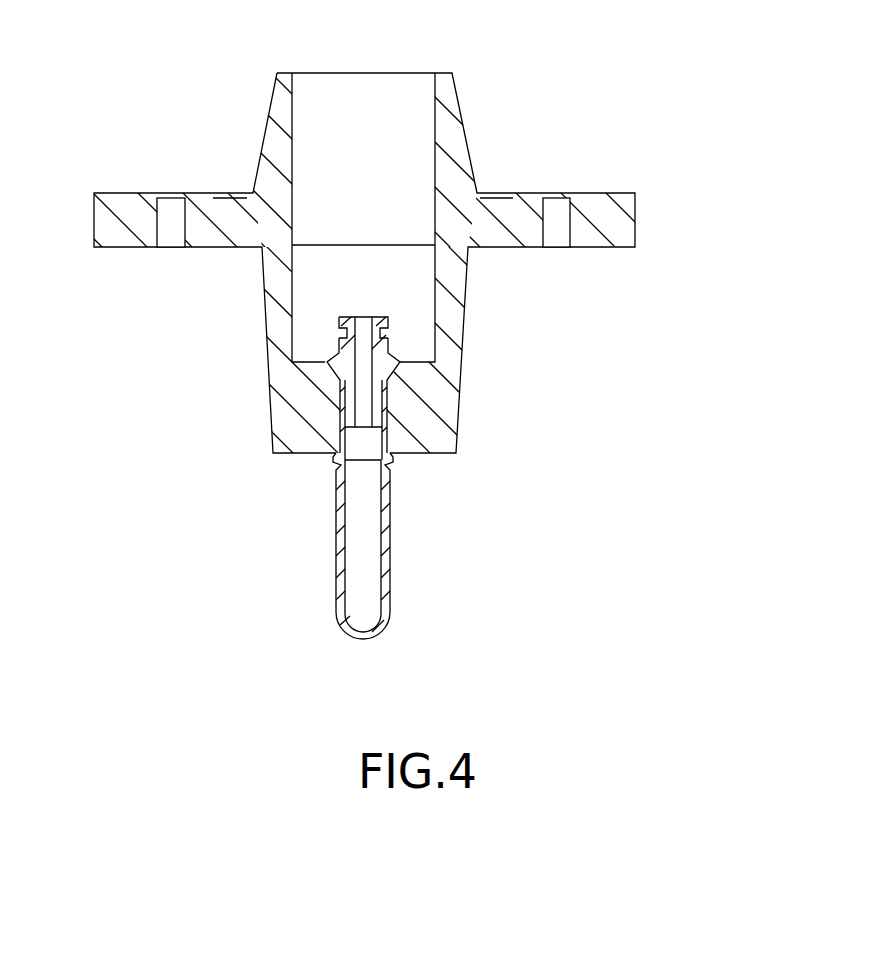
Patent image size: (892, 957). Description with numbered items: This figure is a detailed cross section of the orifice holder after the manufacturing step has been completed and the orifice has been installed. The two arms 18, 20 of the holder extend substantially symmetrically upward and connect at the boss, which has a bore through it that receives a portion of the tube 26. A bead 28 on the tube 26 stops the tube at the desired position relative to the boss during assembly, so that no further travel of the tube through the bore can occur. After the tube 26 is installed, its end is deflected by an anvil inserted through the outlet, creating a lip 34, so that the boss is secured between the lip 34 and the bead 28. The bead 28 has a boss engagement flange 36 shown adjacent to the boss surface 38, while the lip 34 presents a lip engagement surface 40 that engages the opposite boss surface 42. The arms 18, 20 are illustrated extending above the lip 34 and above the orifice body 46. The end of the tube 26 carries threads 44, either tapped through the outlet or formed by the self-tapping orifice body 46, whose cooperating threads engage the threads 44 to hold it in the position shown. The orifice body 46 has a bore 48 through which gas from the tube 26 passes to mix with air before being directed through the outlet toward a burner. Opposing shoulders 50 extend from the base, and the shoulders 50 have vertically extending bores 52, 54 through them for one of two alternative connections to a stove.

The arm 18 is at (455, 322).
The arm 20 is at (276, 277).
The tube 26 is at (335, 542).
The bead 28 is at (336, 472).
The lip 34 is at (386, 387).
The boss engagement flange 36 is at (395, 456).
The boss surface 38 is at (333, 456).
The lip engagement surface 40 is at (338, 322).
The boss surface 42 is at (325, 378).
The threads 44 is at (360, 317).
The orifice body 46 is at (396, 311).
The bore 48 is at (365, 317).
The shoulders 50 is at (620, 203).
The bore 52 is at (175, 212).
The bore 54 is at (558, 202).